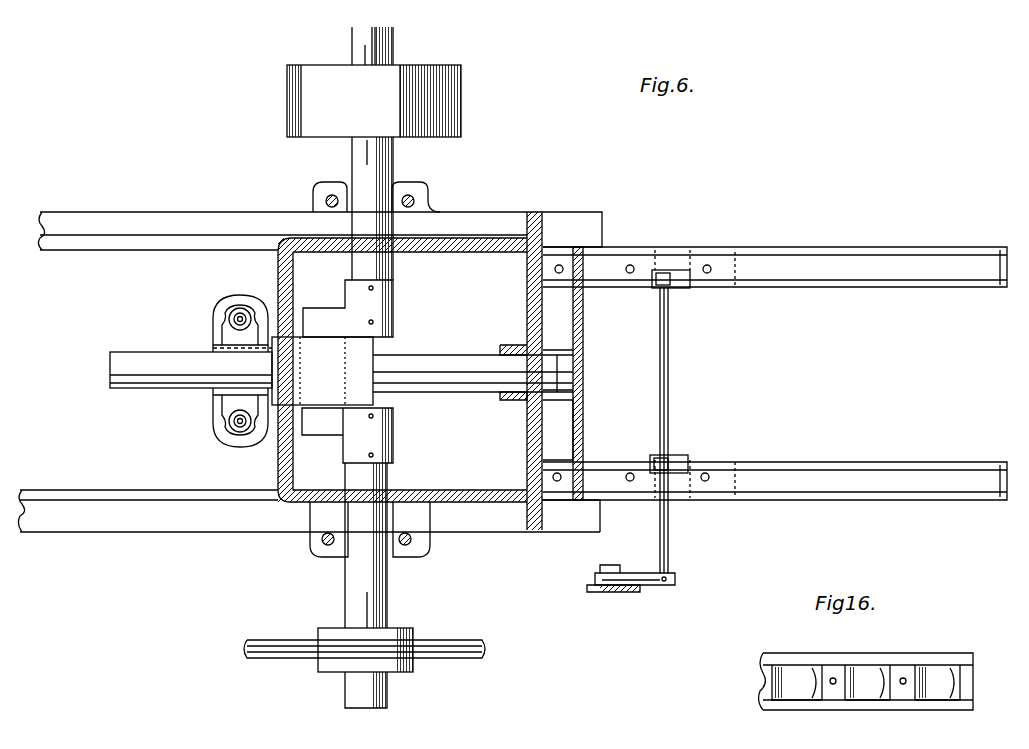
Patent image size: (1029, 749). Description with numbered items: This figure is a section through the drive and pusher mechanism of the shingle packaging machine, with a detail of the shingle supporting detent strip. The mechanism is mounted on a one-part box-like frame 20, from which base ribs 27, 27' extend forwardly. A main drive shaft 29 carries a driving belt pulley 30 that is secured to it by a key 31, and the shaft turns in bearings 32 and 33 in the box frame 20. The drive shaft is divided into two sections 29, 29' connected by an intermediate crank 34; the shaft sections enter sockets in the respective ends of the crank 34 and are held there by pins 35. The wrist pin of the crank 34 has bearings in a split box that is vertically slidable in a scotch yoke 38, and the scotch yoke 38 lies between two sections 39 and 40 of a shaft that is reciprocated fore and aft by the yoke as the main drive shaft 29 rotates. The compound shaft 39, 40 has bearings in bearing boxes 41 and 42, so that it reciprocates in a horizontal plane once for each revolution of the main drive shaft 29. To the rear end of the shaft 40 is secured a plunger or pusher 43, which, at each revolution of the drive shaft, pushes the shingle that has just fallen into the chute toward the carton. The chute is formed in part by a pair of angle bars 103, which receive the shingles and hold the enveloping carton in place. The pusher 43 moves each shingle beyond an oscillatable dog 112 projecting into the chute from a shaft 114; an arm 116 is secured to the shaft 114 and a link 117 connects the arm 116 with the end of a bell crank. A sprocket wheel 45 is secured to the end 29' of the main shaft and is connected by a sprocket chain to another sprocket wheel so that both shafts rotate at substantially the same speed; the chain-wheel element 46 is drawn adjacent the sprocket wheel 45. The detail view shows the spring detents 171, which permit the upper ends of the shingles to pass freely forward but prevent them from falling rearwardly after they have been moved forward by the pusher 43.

In FIG. 6, the box-like frame 20 is at (503, 238).
In FIG. 6, the base rib 27 is at (320, 215).
In FIG. 6, the base rib 27' is at (309, 491).
In FIG. 6, the main drive shaft 29 is at (396, 153).
In FIG. 6, the main drive shaft section 29' is at (393, 586).
In FIG. 6, the driving belt pulley 30 is at (462, 93).
In FIG. 6, the key 31 is at (383, 68).
In FIG. 6, the bearing 32 is at (432, 212).
In FIG. 6, the bearing 33 is at (414, 514).
In FIG. 6, the intermediate crank 34 is at (310, 325).
In FIG. 6, the pin 35 is at (373, 322).
In FIG. 6, the scotch yoke 38 is at (372, 360).
In FIG. 6, the shaft section 39 is at (122, 352).
In FIG. 6, the shaft section 40 is at (450, 372).
In FIG. 6, the bearing box 41 is at (238, 348).
In FIG. 6, the bearing box 42 is at (514, 346).
In FIG. 6, the pusher 43 is at (584, 418).
In FIG. 6, the sprocket wheel 45 is at (414, 640).
In FIG. 6, the disc 46 is at (247, 648).
In FIG. 6, the angle bar 103 is at (982, 277).
In FIG. 6, the oscillatable dog 112 is at (675, 290).
In FIG. 6, the shaft 114 is at (670, 548).
In FIG. 6, the arm 116 is at (622, 575).
In FIG. 6, the link 117 is at (636, 592).
In FIG. 16, the spring detent 171 is at (938, 678).